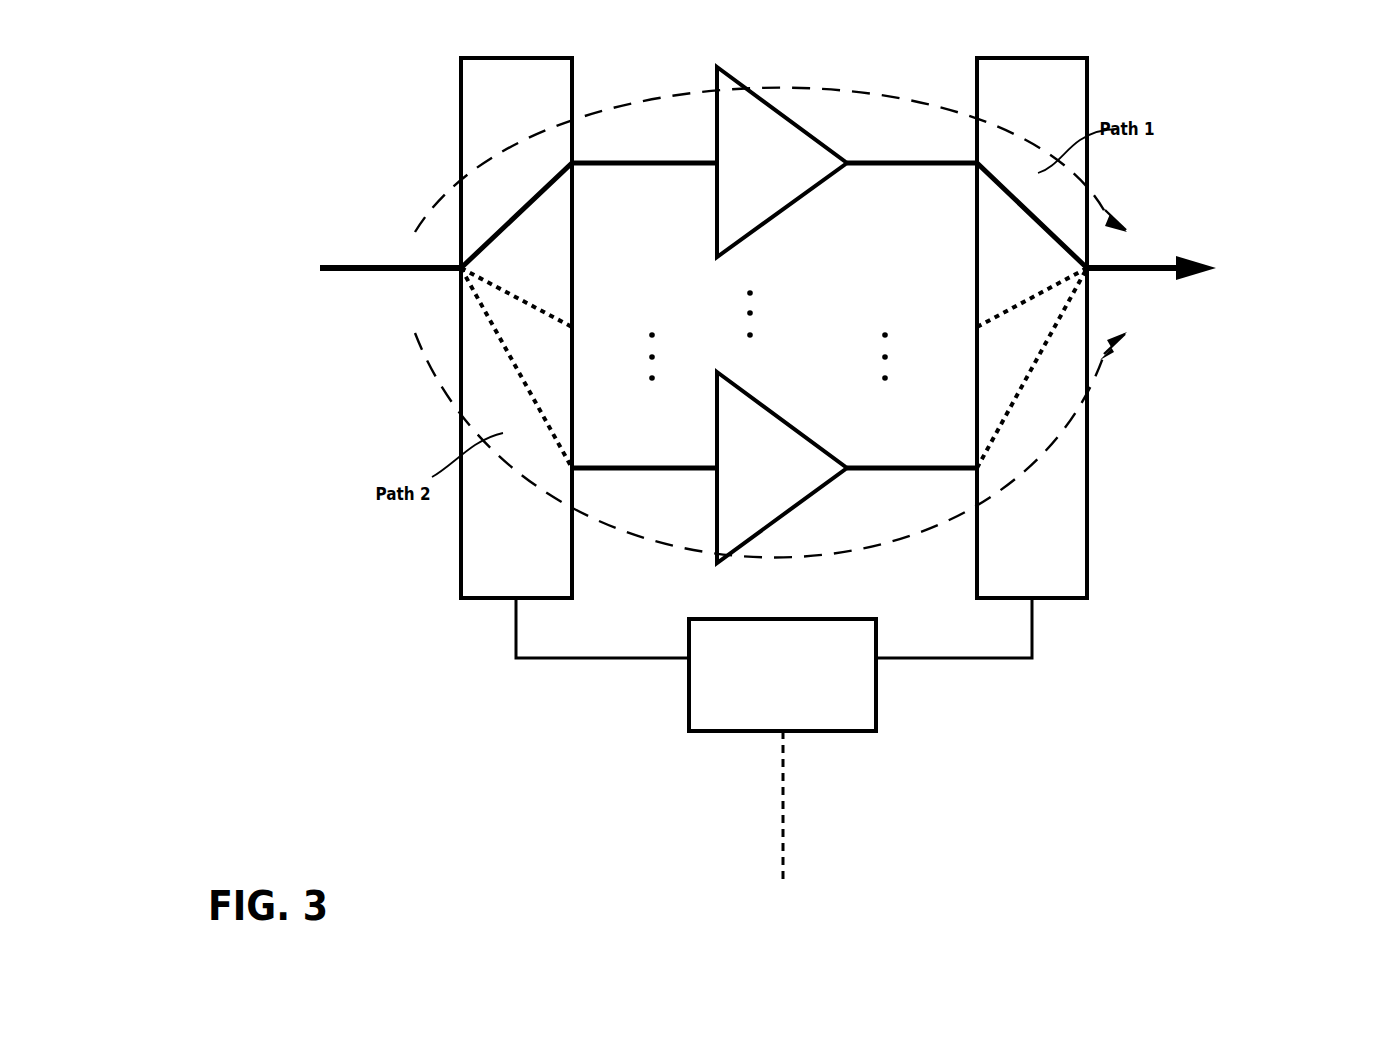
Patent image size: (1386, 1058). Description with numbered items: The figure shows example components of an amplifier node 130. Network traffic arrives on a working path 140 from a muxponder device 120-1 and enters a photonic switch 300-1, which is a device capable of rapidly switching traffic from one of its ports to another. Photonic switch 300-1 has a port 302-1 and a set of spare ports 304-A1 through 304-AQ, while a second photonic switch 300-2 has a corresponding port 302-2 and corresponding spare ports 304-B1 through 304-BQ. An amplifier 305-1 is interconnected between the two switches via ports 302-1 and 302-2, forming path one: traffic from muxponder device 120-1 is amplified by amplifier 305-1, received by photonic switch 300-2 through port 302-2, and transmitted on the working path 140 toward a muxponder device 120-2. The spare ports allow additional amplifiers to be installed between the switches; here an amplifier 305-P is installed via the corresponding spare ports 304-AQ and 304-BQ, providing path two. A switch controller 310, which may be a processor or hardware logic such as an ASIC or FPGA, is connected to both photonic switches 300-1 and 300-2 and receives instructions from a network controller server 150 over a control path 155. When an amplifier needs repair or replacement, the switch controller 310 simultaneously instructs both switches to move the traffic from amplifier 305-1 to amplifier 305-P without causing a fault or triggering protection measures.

The amplifier node 130 is at (305, 78).
The working path 140 is at (378, 270).
The muxponder device 120-1 is at (252, 279).
The muxponder device 120-2 is at (1288, 283).
The photonic switch 300-1 is at (460, 140).
The photonic switch 300-2 is at (1088, 505).
The port 302-1 is at (574, 167).
The port 302-2 is at (975, 167).
The spare port 304-A1 is at (574, 327).
The spare port 304-AQ is at (575, 466).
The spare port 304-B1 is at (975, 327).
The spare port 304-BQ is at (975, 466).
The amplifier 305-1 is at (782, 162).
The amplifier 305-P is at (774, 467).
The switch controller 310 is at (774, 664).
The control path 155 is at (784, 815).
The network controller server 150 is at (683, 838).